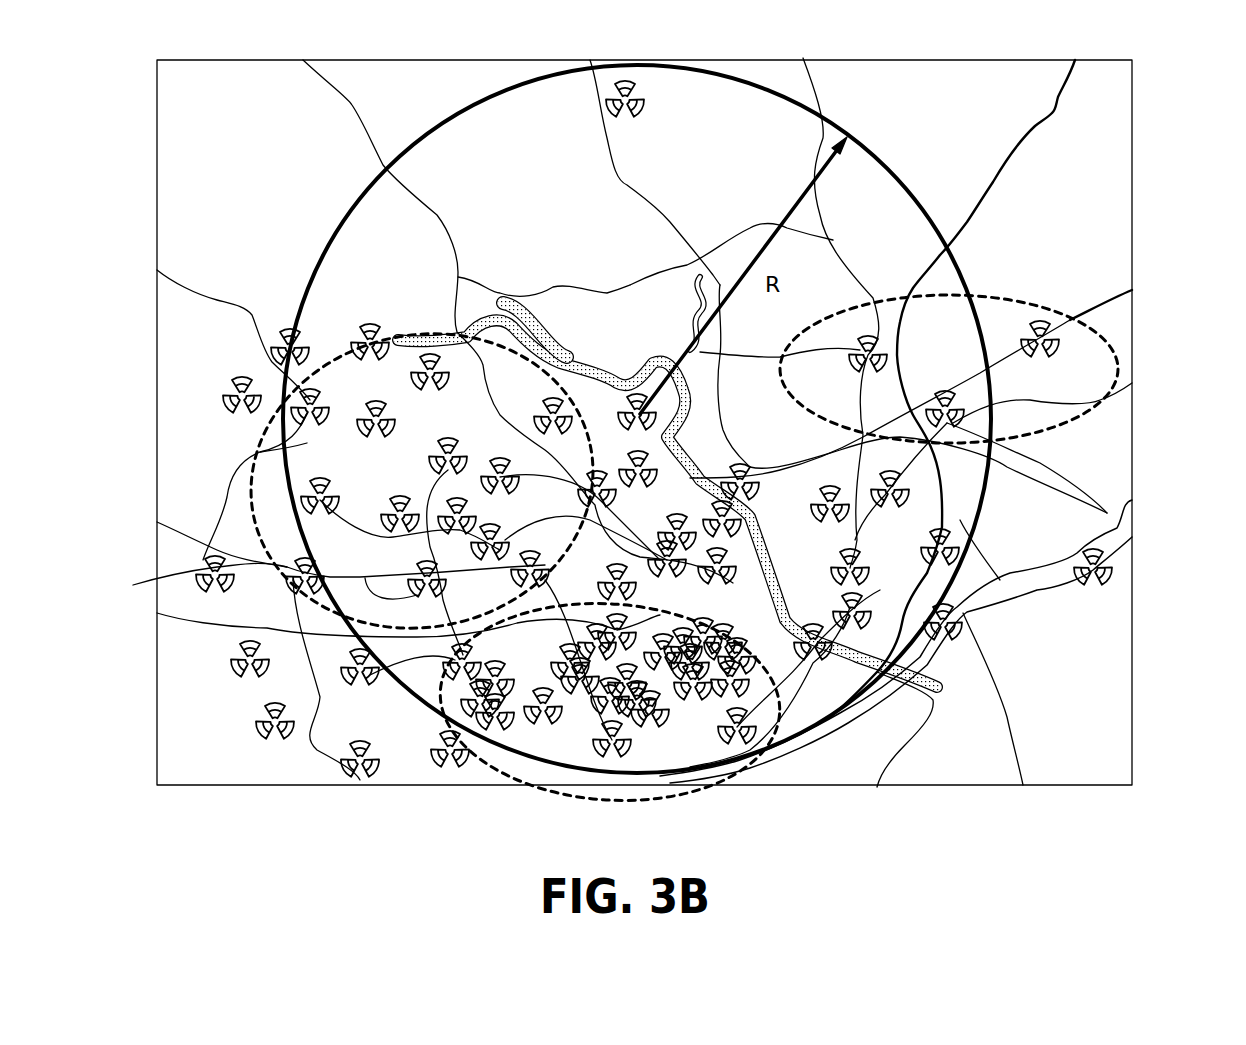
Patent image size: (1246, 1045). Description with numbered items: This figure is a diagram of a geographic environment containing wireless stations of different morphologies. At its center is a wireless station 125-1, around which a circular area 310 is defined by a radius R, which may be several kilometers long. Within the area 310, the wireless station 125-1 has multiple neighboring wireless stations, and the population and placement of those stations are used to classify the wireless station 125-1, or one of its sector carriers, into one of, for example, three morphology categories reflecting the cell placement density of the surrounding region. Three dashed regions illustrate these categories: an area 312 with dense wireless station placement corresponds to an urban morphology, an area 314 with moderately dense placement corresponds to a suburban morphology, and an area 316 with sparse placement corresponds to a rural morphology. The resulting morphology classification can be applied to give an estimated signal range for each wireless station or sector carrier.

The area 310 is at (907, 190).
The area 312 is at (686, 800).
The area 314 is at (238, 500).
The area 316 is at (1095, 437).
The wireless station 125-1 is at (636, 380).